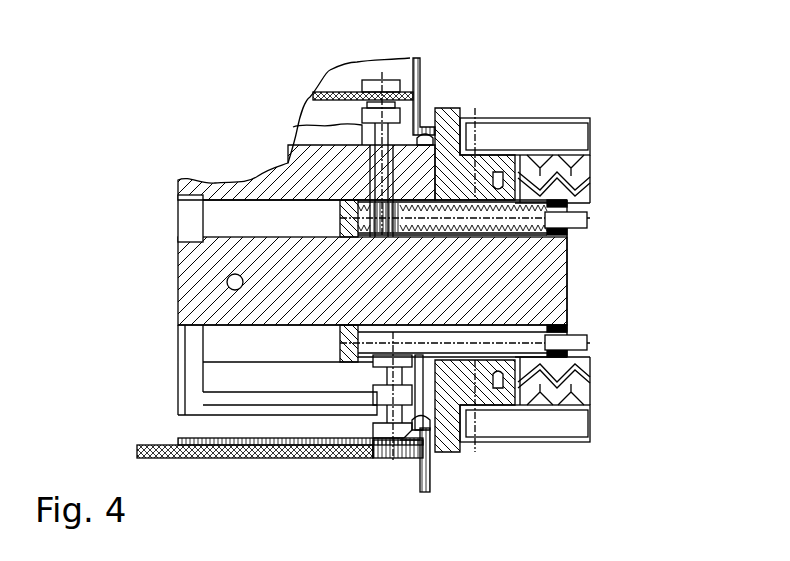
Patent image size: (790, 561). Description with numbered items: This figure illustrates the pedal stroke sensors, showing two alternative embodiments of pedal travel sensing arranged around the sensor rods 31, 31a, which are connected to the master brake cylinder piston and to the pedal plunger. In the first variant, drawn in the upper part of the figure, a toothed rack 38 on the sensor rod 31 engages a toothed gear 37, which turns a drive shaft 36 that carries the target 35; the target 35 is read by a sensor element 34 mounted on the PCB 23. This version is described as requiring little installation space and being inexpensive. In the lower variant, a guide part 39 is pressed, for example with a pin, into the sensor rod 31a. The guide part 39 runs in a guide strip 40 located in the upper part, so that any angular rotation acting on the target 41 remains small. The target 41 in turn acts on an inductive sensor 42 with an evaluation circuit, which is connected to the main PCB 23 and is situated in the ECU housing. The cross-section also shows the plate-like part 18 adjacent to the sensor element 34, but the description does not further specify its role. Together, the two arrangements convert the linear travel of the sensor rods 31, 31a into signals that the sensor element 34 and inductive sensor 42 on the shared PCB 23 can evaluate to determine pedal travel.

The plate 18 is at (422, 66).
The PCB 23 is at (345, 90).
The sensor rod 31 is at (588, 218).
The sensor rod 31a is at (583, 340).
The sensor element 34 is at (400, 80).
The target 35 is at (412, 108).
The drive shaft 36 is at (295, 127).
The toothed gear 37 is at (443, 210).
The toothed rack 38 is at (570, 196).
The guide part 39 is at (572, 232).
The guide strip 40 is at (210, 393).
The target 41 is at (378, 458).
The inductive sensor 42 is at (312, 458).